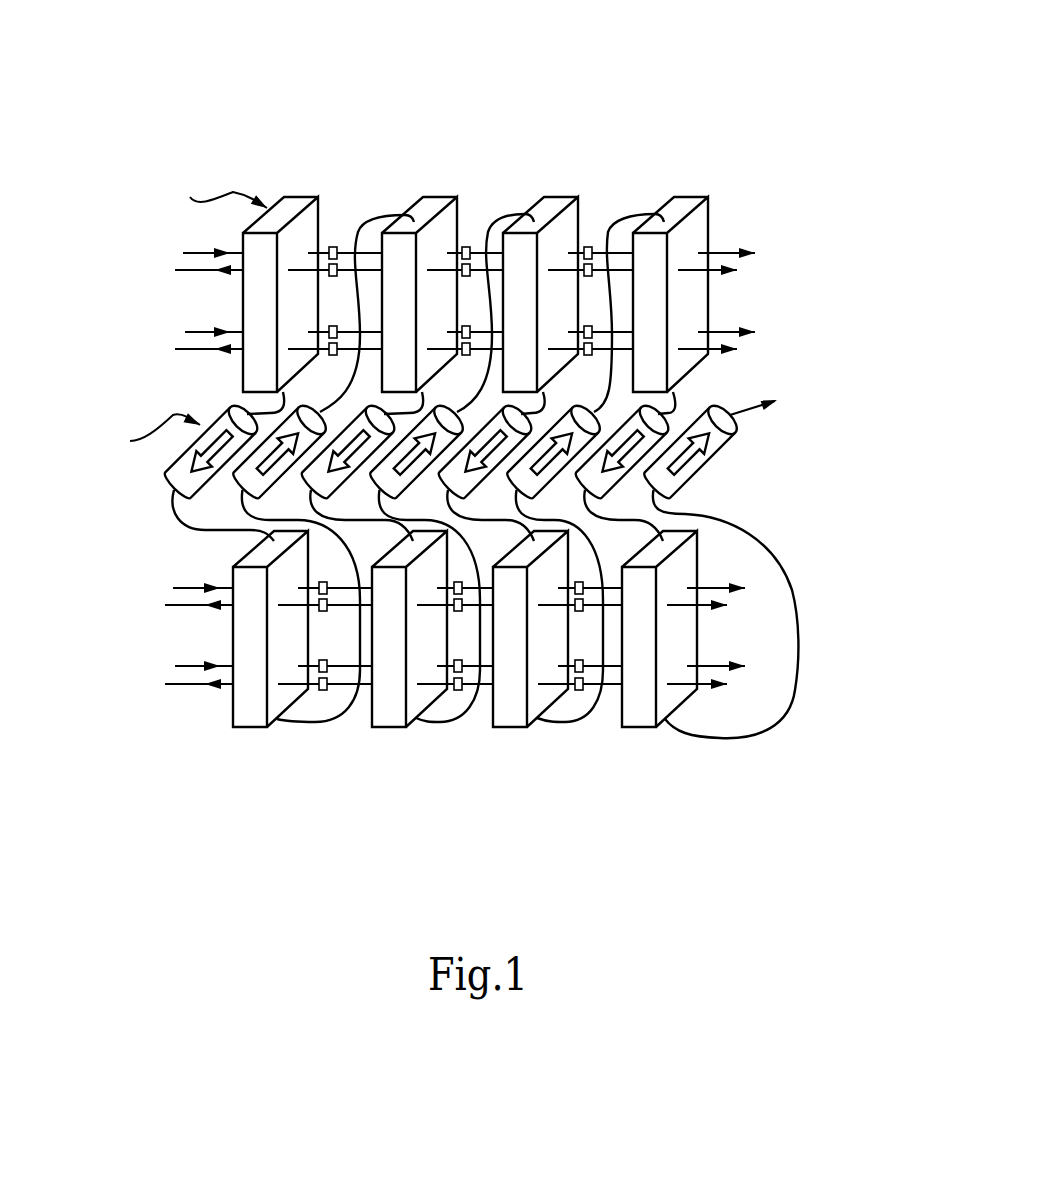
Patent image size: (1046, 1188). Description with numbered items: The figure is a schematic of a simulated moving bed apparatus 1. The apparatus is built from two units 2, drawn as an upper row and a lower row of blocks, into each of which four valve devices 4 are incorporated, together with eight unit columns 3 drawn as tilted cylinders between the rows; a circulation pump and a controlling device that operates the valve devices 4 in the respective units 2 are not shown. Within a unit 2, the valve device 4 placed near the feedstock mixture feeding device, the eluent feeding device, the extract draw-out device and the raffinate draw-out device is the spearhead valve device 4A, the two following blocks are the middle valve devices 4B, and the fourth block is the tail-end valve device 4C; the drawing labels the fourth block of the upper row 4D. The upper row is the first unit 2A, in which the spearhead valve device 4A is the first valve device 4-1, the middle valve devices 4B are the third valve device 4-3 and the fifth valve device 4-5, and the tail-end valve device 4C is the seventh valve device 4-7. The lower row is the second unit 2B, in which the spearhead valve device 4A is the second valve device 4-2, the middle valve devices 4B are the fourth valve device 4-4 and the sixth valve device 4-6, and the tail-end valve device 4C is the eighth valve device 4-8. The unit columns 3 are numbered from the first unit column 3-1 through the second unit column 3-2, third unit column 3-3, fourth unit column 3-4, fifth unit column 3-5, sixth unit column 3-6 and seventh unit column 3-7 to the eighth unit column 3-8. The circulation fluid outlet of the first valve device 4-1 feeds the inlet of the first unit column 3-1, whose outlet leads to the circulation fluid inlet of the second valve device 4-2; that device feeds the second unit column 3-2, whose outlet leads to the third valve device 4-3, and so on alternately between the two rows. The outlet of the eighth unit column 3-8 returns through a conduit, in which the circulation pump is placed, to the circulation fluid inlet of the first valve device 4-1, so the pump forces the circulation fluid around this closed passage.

The simulated moving bed apparatus 1 is at (185, 733).
The unit 2 is at (479, 452).
The first unit 2A is at (693, 83).
The second unit 2B is at (660, 810).
The unit column 3 is at (712, 457).
The first unit column 3-1 is at (167, 480).
The second unit column 3-2 is at (222, 480).
The third unit column 3-3 is at (297, 474).
The fourth unit column 3-4 is at (368, 474).
The fifth unit column 3-5 is at (436, 479).
The sixth unit column 3-6 is at (495, 486).
The seventh unit column 3-7 is at (566, 476).
The eighth unit column 3-8 is at (625, 486).
The valve device 4 is at (484, 257).
The spearhead valve device 4A is at (297, 203).
The middle valve device 4B is at (437, 203).
The tail-end valve device 4C is at (556, 203).
The valve block 4D is at (692, 203).
The first valve device 4-1 is at (318, 222).
The second valve device 4-2 is at (250, 722).
The third valve device 4-3 is at (459, 223).
The fourth valve device 4-4 is at (392, 722).
The fifth valve device 4-5 is at (580, 221).
The sixth valve device 4-6 is at (510, 720).
The seventh valve device 4-7 is at (708, 217).
The eighth valve device 4-8 is at (637, 720).